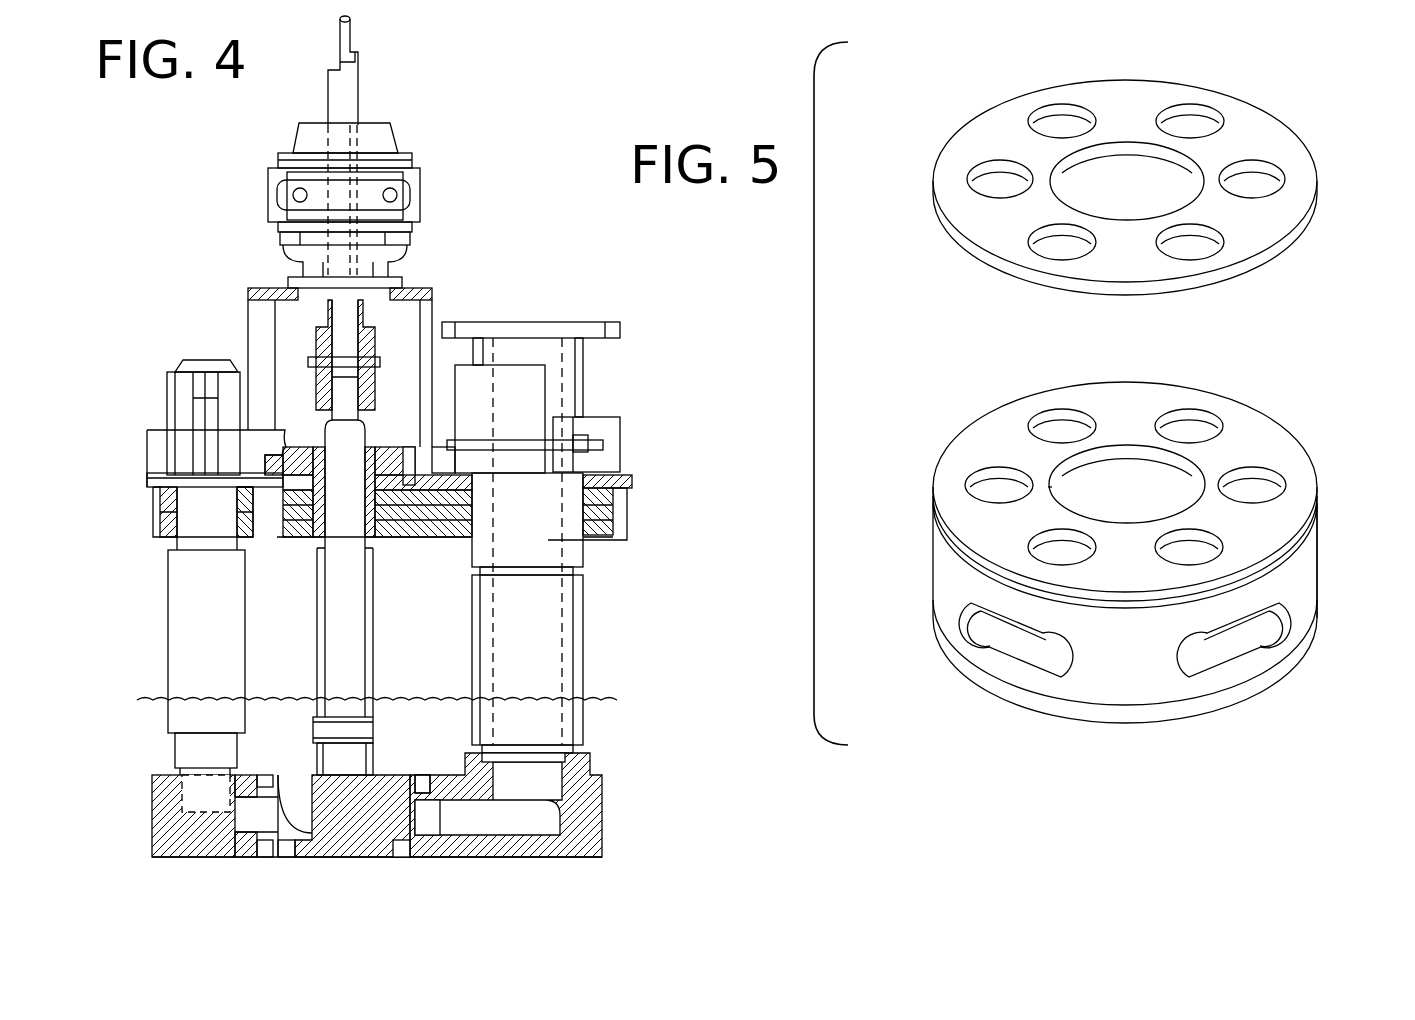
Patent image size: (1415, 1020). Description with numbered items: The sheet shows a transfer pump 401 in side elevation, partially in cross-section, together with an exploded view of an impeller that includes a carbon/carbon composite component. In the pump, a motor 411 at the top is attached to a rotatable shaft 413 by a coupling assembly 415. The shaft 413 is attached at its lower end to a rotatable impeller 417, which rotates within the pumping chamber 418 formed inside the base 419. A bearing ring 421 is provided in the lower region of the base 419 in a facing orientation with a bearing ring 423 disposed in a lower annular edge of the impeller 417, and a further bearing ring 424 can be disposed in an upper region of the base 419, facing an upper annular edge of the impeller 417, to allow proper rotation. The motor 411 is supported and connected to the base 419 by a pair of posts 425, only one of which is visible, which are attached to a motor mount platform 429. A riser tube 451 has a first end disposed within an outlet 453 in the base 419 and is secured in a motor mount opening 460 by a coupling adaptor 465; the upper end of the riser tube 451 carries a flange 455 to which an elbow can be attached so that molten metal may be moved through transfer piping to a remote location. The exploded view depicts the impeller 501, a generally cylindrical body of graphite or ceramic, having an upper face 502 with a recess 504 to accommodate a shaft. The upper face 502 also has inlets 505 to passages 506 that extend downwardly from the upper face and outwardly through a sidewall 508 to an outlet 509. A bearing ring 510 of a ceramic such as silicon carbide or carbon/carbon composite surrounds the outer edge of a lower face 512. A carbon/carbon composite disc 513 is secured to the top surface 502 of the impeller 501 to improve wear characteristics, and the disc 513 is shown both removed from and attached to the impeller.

In FIG. 4, the transfer pump 401 is at (212, 242).
In FIG. 4, the motor 411 is at (414, 126).
In FIG. 4, the rotatable shaft 413 is at (340, 665).
In FIG. 4, the coupling assembly 415 is at (368, 325).
In FIG. 4, the rotatable impeller 417 is at (347, 833).
In FIG. 4, the pumping chamber 418 is at (258, 813).
In FIG. 4, the base 419 is at (140, 805).
In FIG. 4, the bearing ring 421 is at (421, 845).
In FIG. 4, the bearing ring 423 is at (407, 853).
In FIG. 4, the bearing ring 424 is at (422, 780).
In FIG. 4, the posts 425 is at (195, 598).
In FIG. 4, the motor mount platform 429 is at (135, 505).
In FIG. 4, the riser tube 451 is at (572, 640).
In FIG. 4, the outlet 453 is at (525, 818).
In FIG. 4, the flange 455 is at (577, 334).
In FIG. 4, the motor mount opening 460 is at (464, 550).
In FIG. 4, the coupling adaptor 465 is at (599, 430).
In FIG. 5, the impeller 501 is at (962, 389).
In FIG. 5, the upper face 502 is at (1127, 400).
In FIG. 5, the recess 504 is at (1175, 490).
In FIG. 5, the inlets 505 is at (1062, 425).
In FIG. 5, the passages 506 is at (1040, 414).
In FIG. 5, the sidewall 508 is at (1138, 668).
In FIG. 5, the outlet 509 is at (1013, 640).
In FIG. 5, the bearing ring 510 is at (1308, 650).
In FIG. 5, the lower face 512 is at (1213, 690).
In FIG. 5, the C/C composite disc 513 is at (1250, 140).